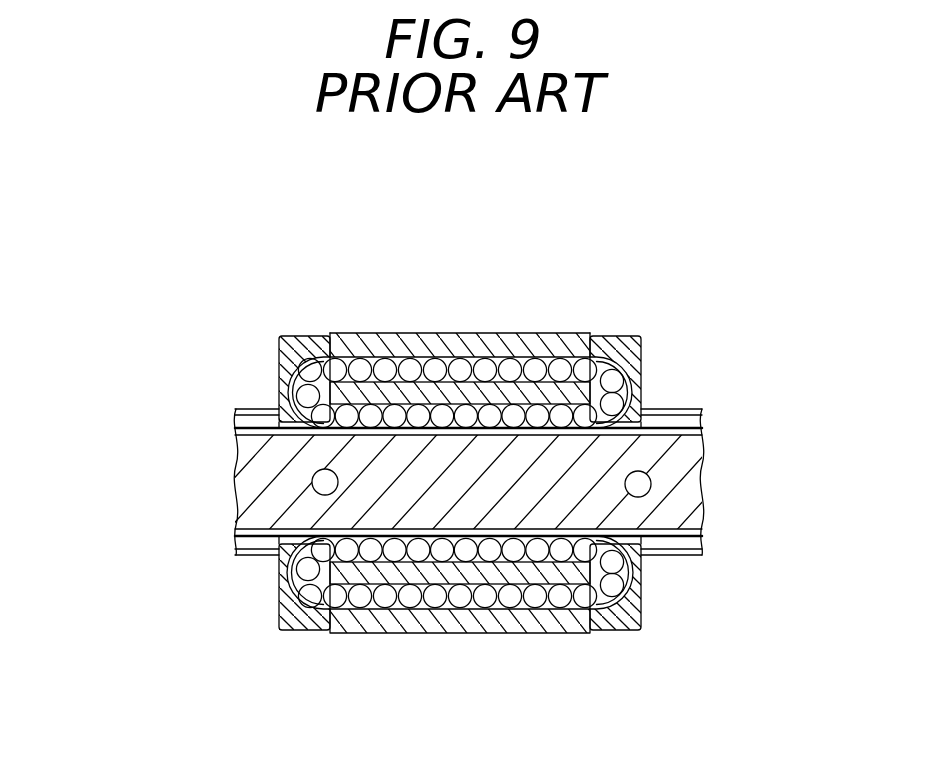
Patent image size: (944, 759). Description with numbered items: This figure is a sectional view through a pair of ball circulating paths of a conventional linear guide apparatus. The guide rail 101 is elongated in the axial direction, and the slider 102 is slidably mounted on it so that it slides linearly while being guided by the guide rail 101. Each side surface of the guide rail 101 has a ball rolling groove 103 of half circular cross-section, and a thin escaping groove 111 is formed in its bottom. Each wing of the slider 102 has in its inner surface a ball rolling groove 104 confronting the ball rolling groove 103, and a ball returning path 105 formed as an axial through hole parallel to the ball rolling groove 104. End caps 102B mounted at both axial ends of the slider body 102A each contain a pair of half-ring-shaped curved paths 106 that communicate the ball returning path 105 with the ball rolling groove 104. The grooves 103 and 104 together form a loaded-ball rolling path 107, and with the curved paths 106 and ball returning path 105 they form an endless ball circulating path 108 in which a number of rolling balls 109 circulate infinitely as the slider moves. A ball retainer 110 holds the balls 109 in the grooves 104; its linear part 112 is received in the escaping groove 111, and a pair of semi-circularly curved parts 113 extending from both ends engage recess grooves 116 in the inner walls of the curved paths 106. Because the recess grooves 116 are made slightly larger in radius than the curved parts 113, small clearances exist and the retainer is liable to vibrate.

The guide rail 101 is at (687, 482).
The slider 102 is at (490, 335).
The slider body 102A is at (541, 633).
The end cap 102B is at (617, 353).
The ball rolling groove 103 is at (685, 423).
The ball rolling groove 104 is at (413, 405).
The ball returning path 105 is at (538, 413).
The curved path 106 is at (292, 383).
The loaded-ball rolling path 107 is at (373, 363).
The endless ball circulating path 108 is at (342, 362).
The rolling ball 109 is at (565, 345).
The ball retainer 110 is at (286, 334).
The escaping groove 111 is at (244, 431).
The linear part 112 is at (366, 538).
The semi-circularly curved part 113 is at (281, 588).
The recess groove 116 is at (640, 380).